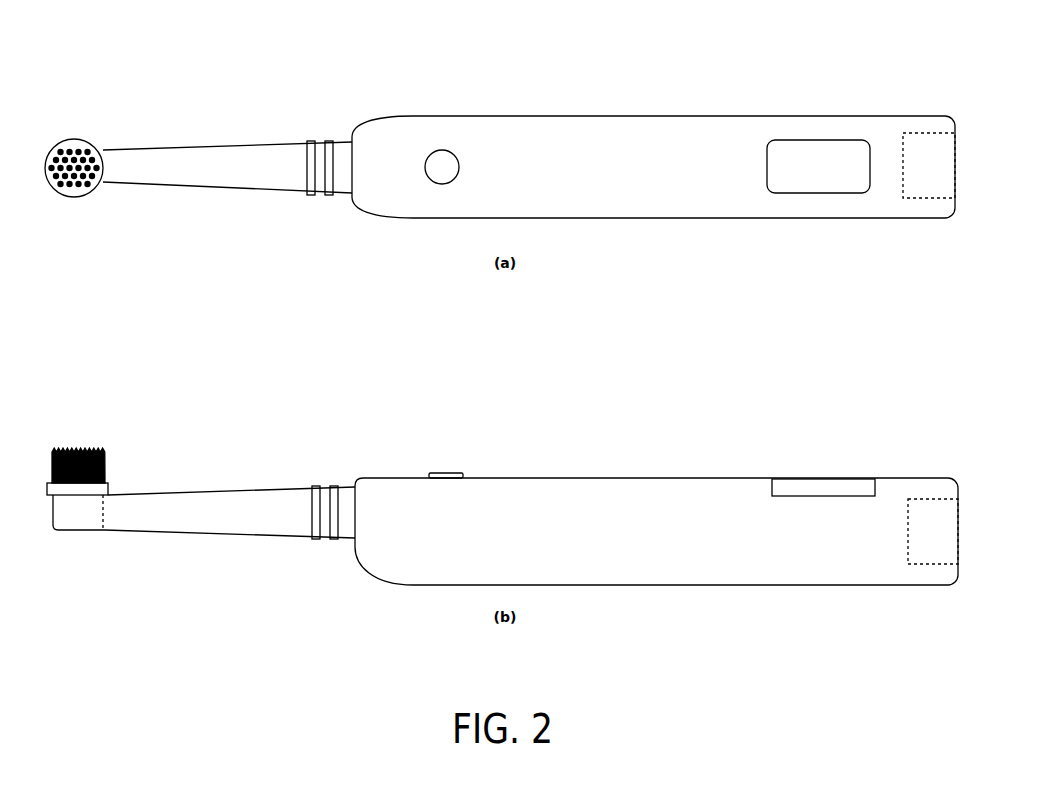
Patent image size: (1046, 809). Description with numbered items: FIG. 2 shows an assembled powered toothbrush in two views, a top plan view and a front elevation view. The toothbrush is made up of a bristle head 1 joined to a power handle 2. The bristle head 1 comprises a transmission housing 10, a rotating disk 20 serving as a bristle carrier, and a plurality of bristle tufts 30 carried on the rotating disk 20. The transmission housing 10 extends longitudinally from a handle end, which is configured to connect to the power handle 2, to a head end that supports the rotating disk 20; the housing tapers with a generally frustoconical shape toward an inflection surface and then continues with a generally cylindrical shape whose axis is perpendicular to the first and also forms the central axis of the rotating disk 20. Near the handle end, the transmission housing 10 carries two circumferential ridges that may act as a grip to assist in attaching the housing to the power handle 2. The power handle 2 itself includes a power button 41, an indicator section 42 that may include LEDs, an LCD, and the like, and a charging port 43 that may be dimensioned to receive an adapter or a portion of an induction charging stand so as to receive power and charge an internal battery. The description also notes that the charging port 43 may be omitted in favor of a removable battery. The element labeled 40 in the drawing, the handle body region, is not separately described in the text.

The bristle head 1 is at (278, 85).
The power handle 2 is at (657, 85).
The transmission housing 10 is at (190, 187).
The rotating disk 20 is at (88, 141).
The bristle tufts 30 is at (60, 196).
The handle body 40 is at (828, 116).
The power button 41 is at (440, 184).
The indicator section 42 is at (810, 193).
The charging port 43 is at (920, 198).